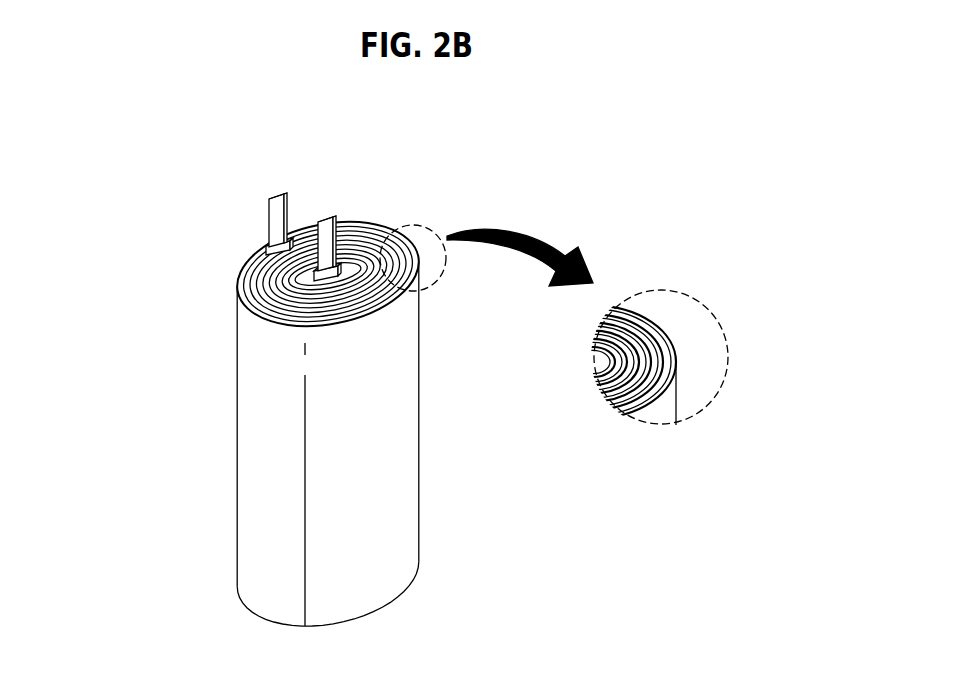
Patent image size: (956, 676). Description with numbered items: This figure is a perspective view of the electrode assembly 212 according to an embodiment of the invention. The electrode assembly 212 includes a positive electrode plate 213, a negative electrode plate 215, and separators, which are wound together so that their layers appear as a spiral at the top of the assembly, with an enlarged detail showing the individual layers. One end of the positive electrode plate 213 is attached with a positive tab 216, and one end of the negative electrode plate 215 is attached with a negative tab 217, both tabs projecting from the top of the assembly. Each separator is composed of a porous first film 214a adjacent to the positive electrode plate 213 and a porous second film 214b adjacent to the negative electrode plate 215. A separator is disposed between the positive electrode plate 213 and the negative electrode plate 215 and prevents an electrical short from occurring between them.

The electrode assembly 212 is at (162, 280).
The positive electrode plate 213 is at (655, 352).
The first film 214a is at (652, 327).
The second film 214b is at (635, 308).
The negative electrode plate 215 is at (622, 377).
The positive tab 216 is at (282, 216).
The negative tab 217 is at (326, 221).